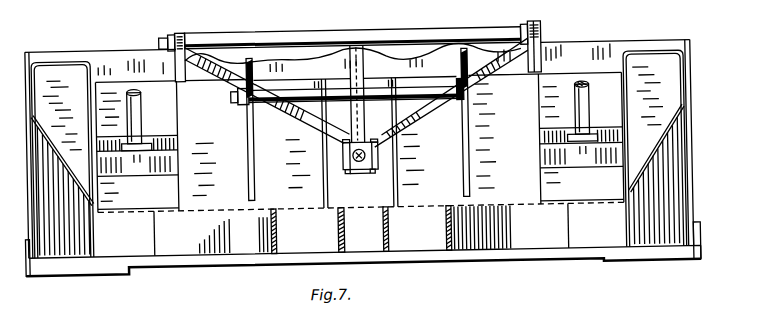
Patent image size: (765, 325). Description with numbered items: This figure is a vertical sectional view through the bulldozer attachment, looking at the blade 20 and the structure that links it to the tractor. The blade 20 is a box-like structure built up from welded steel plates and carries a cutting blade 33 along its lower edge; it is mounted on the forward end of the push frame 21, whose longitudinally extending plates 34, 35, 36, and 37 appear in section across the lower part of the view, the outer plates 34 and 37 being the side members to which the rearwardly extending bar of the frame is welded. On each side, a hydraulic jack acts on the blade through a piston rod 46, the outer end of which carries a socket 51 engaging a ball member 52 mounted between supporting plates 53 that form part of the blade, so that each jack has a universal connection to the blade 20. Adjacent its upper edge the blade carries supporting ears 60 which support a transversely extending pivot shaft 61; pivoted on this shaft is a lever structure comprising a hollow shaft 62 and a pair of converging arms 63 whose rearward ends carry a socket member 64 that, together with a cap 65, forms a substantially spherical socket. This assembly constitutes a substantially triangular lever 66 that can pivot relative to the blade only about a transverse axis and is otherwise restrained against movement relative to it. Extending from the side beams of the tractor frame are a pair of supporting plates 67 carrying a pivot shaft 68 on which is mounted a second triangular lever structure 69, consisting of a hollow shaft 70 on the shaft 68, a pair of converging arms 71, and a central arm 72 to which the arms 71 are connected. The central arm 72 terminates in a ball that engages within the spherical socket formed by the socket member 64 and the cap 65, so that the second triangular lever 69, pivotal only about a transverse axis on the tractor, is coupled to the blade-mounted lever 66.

The blade 20 is at (576, 52).
The push frame 21 is at (533, 243).
The cutting blade 33 is at (637, 260).
The longitudinally extending plate 34 is at (270, 229).
The longitudinally extending plate 35 is at (336, 229).
The longitudinally extending plate 36 is at (382, 228).
The longitudinally extending plate 37 is at (445, 232).
The piston rod 46 is at (140, 100).
The socket 51 is at (153, 136).
The ball member 52 is at (147, 168).
The supporting plates 53 is at (167, 136).
The supporting ears 60 is at (184, 27).
The pivot shaft 61 is at (195, 40).
The hollow shaft 62 is at (322, 41).
The converging arms 63 is at (217, 65).
The socket member 64 is at (380, 150).
The cap 65 is at (365, 166).
The triangular lever 66 is at (415, 30).
The supporting plates 67 is at (247, 144).
The pivot shaft 68 is at (256, 106).
The second triangular lever structure 69 is at (317, 131).
The hollow shaft 70 is at (362, 92).
The converging arms 71 is at (337, 102).
The central arm 72 is at (378, 160).